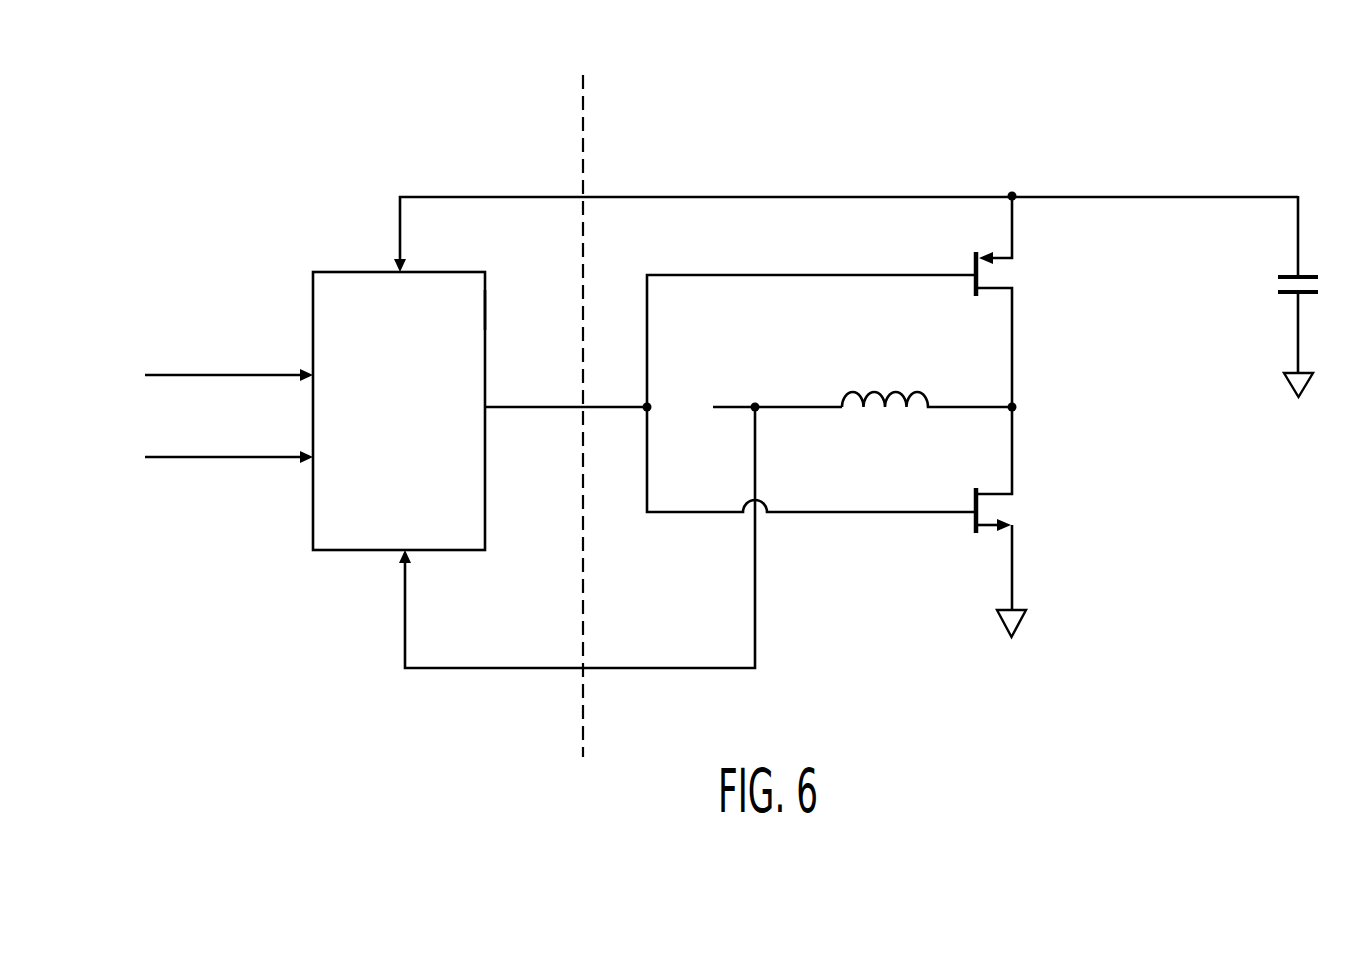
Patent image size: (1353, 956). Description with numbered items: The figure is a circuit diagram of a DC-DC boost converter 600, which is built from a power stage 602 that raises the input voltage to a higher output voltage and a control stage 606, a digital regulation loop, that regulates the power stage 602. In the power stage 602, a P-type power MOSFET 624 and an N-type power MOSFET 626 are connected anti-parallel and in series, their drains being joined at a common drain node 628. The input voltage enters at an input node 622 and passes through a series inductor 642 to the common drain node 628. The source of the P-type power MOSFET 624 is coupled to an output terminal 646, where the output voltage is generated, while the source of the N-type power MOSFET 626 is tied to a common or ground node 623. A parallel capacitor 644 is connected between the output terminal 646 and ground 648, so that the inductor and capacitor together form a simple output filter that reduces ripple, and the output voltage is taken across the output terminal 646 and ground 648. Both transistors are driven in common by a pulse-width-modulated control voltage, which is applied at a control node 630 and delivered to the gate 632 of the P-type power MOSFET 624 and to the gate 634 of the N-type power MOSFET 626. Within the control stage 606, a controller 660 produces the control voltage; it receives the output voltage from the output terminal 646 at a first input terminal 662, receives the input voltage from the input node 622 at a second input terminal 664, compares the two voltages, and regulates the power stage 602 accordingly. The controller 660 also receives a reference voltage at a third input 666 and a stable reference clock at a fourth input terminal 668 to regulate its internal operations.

The DC-DC boost converter 600 is at (130, 140).
The power stage 602 is at (733, 170).
The control stage 606 is at (323, 238).
The controller 660 is at (487, 310).
The first input terminal 662 is at (408, 270).
The second input terminal 664 is at (408, 552).
The third input 666 is at (312, 372).
The fourth input terminal 668 is at (312, 463).
The control node 630 is at (650, 411).
The input node 622 is at (758, 411).
The series inductor 642 is at (848, 392).
The common drain node 628 is at (1006, 401).
The P-type power MOSFET 624 is at (1041, 297).
The gate of the P-type power MOSFET 632 is at (972, 270).
The N-type power MOSFET 626 is at (1049, 535).
The gate of the N-type power MOSFET 634 is at (965, 524).
The common or ground node 623 is at (1008, 590).
The output terminal 646 is at (1294, 200).
The parallel capacitor 644 is at (1290, 294).
The ground 648 is at (1292, 393).